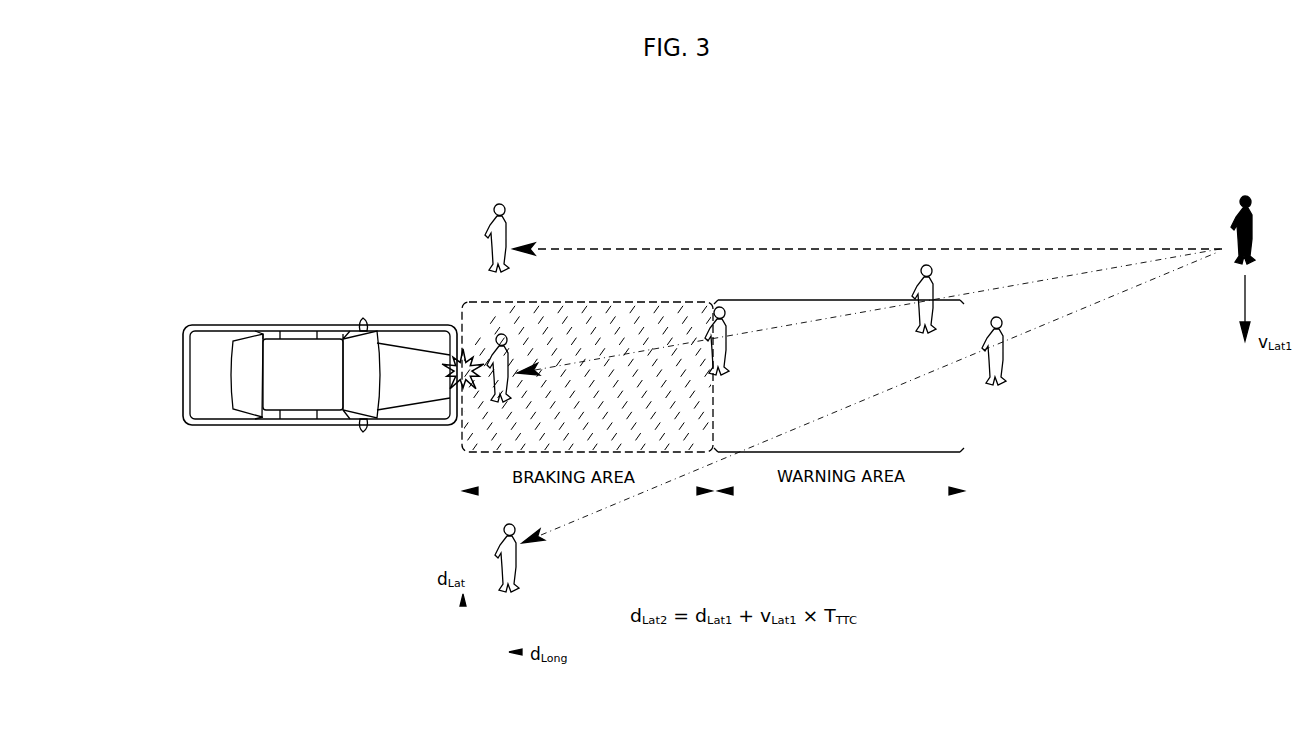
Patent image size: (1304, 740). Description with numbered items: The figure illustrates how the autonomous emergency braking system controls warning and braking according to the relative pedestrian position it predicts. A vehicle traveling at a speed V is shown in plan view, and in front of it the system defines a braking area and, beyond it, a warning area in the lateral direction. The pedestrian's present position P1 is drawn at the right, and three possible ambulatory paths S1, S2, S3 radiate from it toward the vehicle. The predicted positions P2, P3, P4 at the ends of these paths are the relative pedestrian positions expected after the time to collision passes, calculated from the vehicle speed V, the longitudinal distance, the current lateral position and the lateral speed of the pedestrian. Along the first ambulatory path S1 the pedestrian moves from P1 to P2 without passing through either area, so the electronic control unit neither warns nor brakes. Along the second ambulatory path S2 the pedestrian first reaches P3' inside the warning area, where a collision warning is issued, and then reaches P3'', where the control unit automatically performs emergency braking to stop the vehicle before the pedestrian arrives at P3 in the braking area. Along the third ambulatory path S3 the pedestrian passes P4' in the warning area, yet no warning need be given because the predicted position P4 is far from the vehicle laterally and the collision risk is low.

The speed of the vehicle V is at (165, 375).
The present position of a pedestrian P1 is at (1250, 219).
The vehicle-pedestrian-collision-predicted position P2 is at (500, 227).
The vehicle-pedestrian-collision-predicted position P3 is at (500, 357).
The pedestrian position within the warning area P3' is at (939, 298).
The pedestrian position entering the braking area P3'' is at (732, 341).
The vehicle-pedestrian-collision-predicted position P4 is at (493, 554).
The pedestrian position in the warning area P4' is at (1010, 351).
The ambulatory path S1 is at (867, 239).
The ambulatory path S2 is at (868, 314).
The ambulatory path S3 is at (869, 400).